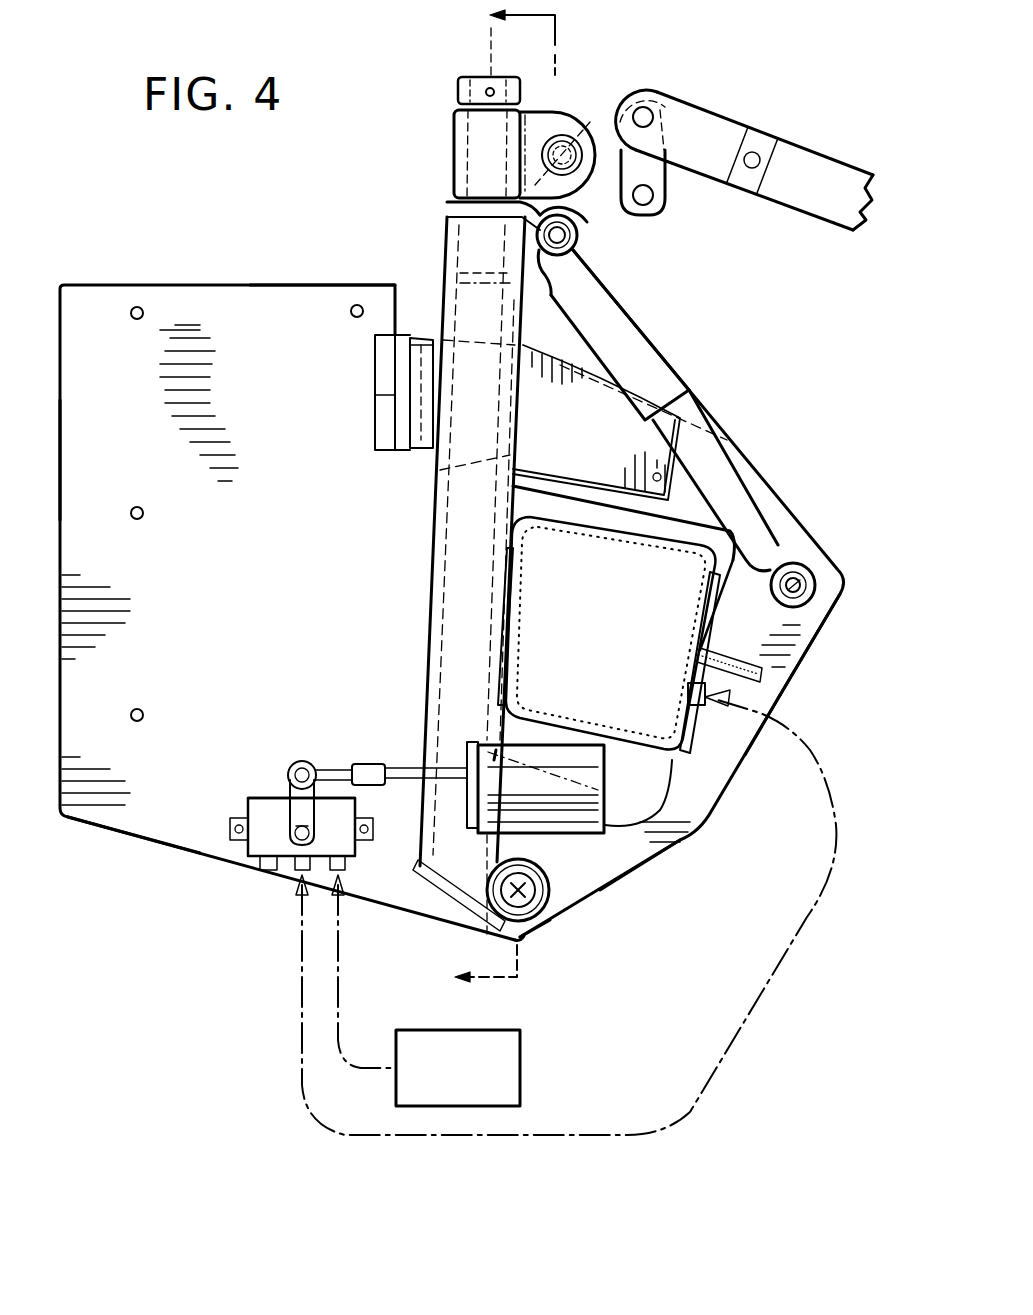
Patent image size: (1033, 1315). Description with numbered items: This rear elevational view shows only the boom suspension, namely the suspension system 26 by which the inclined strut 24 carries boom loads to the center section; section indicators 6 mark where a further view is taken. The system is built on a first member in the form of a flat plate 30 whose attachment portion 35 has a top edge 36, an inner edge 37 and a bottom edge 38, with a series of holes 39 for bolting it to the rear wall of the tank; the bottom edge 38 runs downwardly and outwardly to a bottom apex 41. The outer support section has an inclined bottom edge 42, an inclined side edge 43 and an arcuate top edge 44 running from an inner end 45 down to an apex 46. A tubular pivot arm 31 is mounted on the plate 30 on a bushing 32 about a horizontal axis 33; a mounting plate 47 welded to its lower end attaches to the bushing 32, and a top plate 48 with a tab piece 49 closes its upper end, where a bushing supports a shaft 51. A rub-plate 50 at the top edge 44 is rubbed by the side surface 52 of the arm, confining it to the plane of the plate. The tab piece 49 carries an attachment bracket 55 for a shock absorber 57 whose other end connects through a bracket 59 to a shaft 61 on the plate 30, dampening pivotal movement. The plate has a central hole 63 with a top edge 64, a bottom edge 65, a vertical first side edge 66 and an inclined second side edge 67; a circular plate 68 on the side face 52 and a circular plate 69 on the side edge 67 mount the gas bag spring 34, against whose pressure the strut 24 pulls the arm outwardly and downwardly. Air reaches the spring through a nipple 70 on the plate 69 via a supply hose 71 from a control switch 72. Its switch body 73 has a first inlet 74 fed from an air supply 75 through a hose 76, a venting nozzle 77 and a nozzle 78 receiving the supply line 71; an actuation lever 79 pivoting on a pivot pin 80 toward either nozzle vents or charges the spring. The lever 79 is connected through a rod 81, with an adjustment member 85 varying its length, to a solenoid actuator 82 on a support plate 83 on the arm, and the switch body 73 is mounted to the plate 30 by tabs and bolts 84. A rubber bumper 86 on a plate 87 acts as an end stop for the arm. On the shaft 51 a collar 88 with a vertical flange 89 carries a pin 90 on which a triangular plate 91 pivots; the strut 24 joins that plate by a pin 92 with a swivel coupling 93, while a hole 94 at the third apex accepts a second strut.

The section line 6- 6 is at (484, 498).
The inclined strut 24 is at (820, 170).
The suspension system 26 is at (786, 436).
The plate 30 is at (236, 300).
The pivot arm 31 is at (430, 573).
The bushing 32 is at (548, 860).
The horizontal axis 33 is at (535, 888).
The gas bag spring 34 is at (560, 630).
The attachment portion 35 is at (182, 302).
The top edge 36 is at (281, 278).
The inner edge 37 is at (52, 478).
The bottom edge 38 is at (138, 855).
The holes 39 is at (136, 322).
The bottom apex 41 is at (530, 940).
The bottom edge 42 is at (650, 860).
The side edge 43 is at (780, 688).
The arcuate top edge 44 is at (792, 502).
The inner end 45 is at (405, 335).
The apex 46 is at (843, 590).
The mounting plate 47 is at (460, 915).
The top plate 48 is at (445, 203).
The tab piece 49 is at (583, 232).
The rub-plate 50 is at (596, 430).
The shaft 51 is at (475, 130).
The side surface 52 is at (490, 45).
The attachment bracket 55 is at (562, 256).
The shock absorber 57 is at (652, 328).
The bracket 59 is at (812, 550).
The shaft 61 is at (820, 592).
The central hole 63 is at (712, 562).
The top edge 64 is at (592, 508).
The bottom edge 65 is at (670, 770).
The first side edge 66 is at (505, 525).
The second side edge 67 is at (678, 770).
The circular plate 68 is at (522, 586).
The circular plate 69 is at (700, 630).
The nipple 70 is at (700, 710).
The supply hose 71 is at (302, 1005).
The control switch 72 is at (268, 765).
The switch body 73 is at (252, 785).
The first inlet 74 is at (348, 875).
The air supply 75 is at (522, 1066).
The hose 76 is at (340, 990).
The nozzle 77 is at (262, 870).
The nozzle 78 is at (285, 880).
The actuation lever 79 is at (300, 758).
The pivot pin 80 is at (290, 830).
The rod 81 is at (412, 765).
The solenoid actuator 82 is at (540, 760).
The support plate 83 is at (585, 755).
The tabs and bolts 84 is at (225, 830).
The adjustment member 85 is at (365, 765).
The rubber bumper 86 is at (420, 355).
The plate 87 is at (395, 397).
The collar 88 is at (453, 158).
The vertical flange 89 is at (555, 118).
The pin 90 is at (578, 158).
The triangular plate 91 is at (663, 165).
The pin 92 is at (655, 100).
The swivel coupling 93 is at (740, 115).
The hole 94 is at (648, 205).